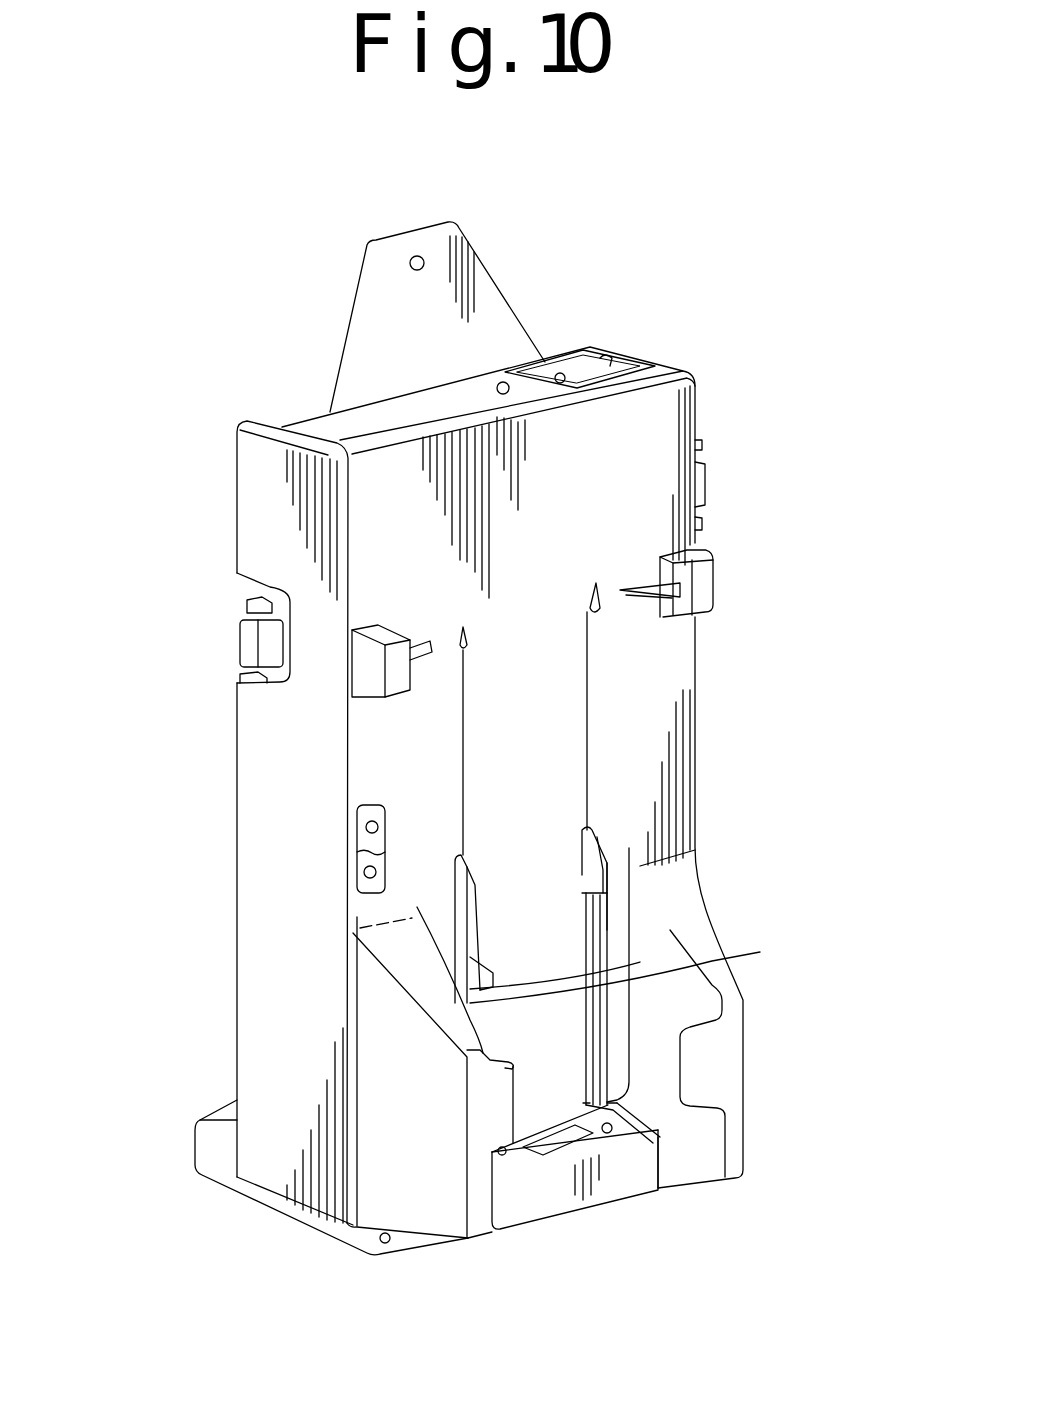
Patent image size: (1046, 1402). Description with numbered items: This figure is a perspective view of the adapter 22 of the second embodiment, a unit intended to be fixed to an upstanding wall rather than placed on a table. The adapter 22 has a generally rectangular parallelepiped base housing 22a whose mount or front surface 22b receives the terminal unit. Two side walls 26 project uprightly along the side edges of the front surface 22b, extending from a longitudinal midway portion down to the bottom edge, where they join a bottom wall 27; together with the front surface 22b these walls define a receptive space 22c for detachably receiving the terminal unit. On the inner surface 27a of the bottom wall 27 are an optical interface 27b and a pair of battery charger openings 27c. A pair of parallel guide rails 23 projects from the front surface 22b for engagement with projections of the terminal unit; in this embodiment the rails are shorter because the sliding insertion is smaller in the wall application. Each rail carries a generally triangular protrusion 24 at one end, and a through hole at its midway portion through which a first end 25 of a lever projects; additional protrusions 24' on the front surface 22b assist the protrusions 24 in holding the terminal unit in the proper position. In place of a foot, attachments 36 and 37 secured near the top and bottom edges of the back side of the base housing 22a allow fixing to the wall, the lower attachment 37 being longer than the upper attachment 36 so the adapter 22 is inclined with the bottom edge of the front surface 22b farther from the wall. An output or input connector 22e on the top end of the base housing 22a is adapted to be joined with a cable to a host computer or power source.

The adapter 22 is at (696, 712).
The base housing 22a is at (282, 840).
The front surface 22b is at (383, 513).
The receptive space 22c is at (553, 1050).
The output or input connector 22e is at (580, 372).
The guide rails 23 is at (486, 966).
The protrusions 24 is at (634, 542).
The additional protrusions 24' is at (717, 555).
The first end of lever 25 is at (481, 970).
The side walls 26 is at (447, 1200).
The bottom wall 27 is at (550, 1197).
The inner surface of bottom wall 27a is at (580, 1100).
The optical interface 27b is at (550, 1140).
The battery charger openings 27c is at (613, 1133).
The attachment 36 is at (505, 300).
The attachment 37 is at (197, 1157).